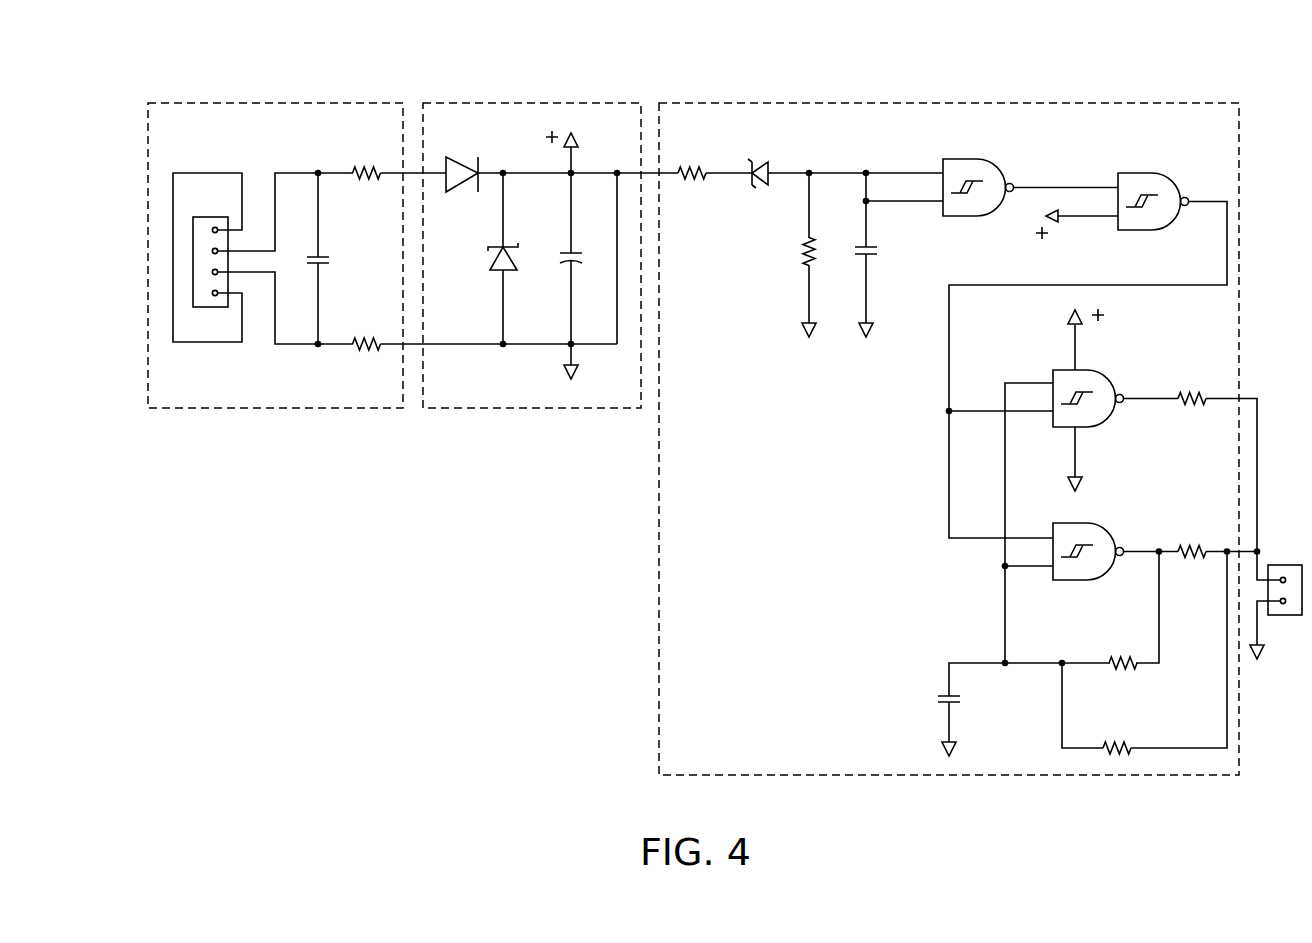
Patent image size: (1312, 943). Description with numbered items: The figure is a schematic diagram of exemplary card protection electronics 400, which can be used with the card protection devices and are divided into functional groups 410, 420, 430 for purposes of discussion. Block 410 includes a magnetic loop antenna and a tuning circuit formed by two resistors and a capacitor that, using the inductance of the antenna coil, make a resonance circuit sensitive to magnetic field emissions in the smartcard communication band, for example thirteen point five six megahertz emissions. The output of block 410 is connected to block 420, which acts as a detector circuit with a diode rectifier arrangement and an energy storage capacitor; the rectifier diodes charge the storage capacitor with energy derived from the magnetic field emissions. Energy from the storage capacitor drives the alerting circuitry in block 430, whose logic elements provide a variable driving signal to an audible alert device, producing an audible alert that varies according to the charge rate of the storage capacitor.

The card protection electronics 400 is at (1048, 43).
The block 410 is at (292, 103).
The block 420 is at (533, 103).
The block 430 is at (812, 103).